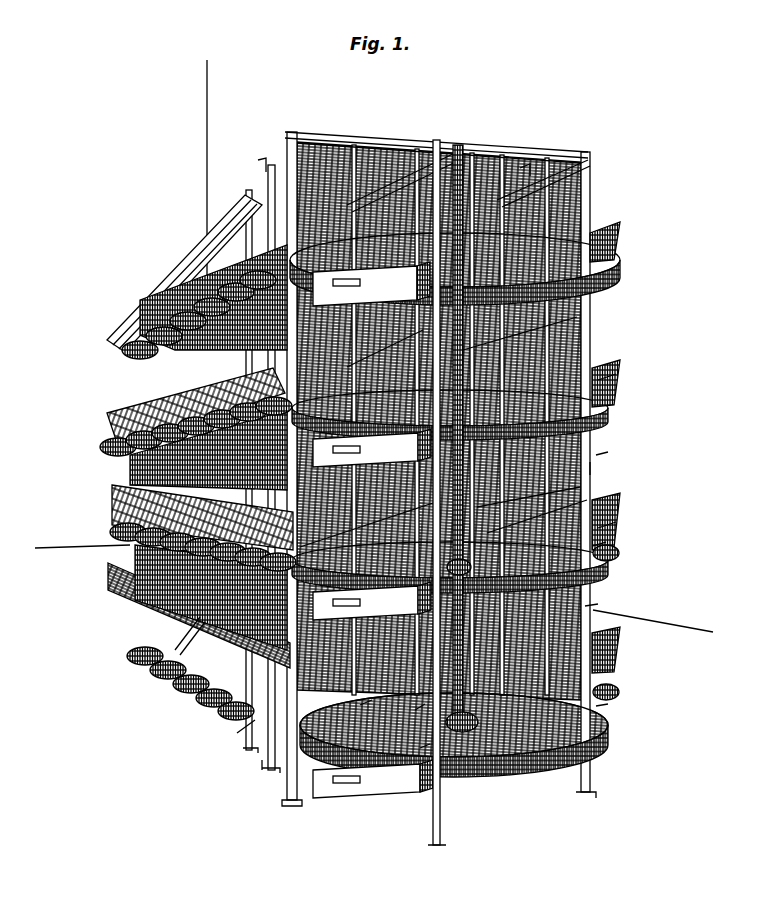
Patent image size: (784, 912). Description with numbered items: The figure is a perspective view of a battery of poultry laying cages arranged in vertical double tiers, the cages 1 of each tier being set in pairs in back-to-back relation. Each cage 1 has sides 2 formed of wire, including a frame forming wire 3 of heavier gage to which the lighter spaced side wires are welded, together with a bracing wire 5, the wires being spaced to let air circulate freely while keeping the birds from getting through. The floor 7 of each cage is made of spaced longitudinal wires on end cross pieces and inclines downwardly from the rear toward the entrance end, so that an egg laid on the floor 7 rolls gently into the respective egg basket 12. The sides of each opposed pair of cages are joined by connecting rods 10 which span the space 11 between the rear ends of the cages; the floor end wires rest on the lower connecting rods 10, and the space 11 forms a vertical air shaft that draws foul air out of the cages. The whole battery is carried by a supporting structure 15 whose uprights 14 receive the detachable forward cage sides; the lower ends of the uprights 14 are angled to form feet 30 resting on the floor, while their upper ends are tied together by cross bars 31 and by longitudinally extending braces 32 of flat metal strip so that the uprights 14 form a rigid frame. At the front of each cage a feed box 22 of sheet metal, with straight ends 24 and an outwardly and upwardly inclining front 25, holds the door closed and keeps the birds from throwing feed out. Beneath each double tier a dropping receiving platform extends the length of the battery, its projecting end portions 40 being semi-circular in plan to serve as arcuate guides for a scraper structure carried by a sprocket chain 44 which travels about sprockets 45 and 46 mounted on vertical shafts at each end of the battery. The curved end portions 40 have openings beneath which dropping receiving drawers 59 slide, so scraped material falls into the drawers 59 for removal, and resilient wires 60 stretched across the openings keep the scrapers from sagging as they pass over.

The cage 1 is at (362, 150).
The side 2 is at (157, 660).
The frame forming wire 3 is at (598, 458).
The bracing wire 5 is at (590, 608).
The floor 7 is at (598, 708).
The connecting rod 10 is at (596, 548).
The space 11 is at (440, 192).
The egg basket 12 is at (600, 556).
The upright 14 is at (258, 165).
The supporting structure 15 is at (601, 474).
The feed box 22 is at (598, 232).
The end 24 is at (598, 383).
The front 25 is at (600, 500).
The foot 30 is at (590, 797).
The cross bar 31 is at (405, 143).
The longitudinally extending brace 32 is at (263, 160).
The end portion 40 is at (612, 293).
The sprocket chain 44 is at (415, 712).
The sprocket 45 is at (592, 506).
The sprocket 46 is at (470, 730).
The dropping receiving drawer 59 is at (386, 262).
The wire 60 is at (425, 748).